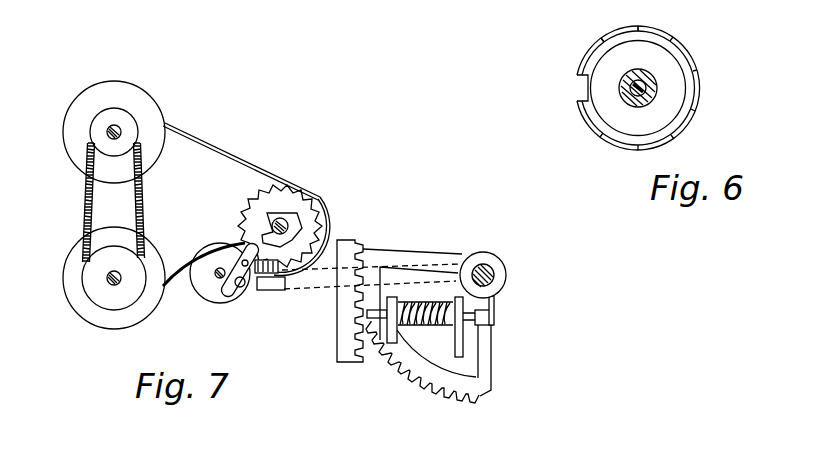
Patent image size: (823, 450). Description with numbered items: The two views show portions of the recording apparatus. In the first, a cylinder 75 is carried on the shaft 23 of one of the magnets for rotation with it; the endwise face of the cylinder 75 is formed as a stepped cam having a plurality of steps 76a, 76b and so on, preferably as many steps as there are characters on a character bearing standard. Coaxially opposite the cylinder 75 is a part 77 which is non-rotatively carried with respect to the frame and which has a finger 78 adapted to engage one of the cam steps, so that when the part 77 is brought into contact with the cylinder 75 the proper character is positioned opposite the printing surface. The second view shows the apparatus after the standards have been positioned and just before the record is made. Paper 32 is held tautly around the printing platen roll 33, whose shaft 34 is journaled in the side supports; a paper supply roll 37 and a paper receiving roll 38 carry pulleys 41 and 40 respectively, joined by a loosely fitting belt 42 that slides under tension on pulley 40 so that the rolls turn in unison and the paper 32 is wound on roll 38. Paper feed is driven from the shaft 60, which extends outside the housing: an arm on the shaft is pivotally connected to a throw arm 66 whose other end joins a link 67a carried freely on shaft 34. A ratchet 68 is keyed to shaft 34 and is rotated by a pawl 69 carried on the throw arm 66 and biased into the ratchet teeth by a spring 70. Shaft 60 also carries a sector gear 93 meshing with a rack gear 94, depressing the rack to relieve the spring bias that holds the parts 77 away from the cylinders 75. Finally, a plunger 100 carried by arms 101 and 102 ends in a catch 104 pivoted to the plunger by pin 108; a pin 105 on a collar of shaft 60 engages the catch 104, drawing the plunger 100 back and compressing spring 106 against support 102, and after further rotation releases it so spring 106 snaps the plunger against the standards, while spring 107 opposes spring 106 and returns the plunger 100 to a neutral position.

In FIG. 7, the paper supply roll 37 is at (100, 318).
In FIG. 7, the paper receiving roll 38 is at (145, 111).
In FIG. 7, the pulley 40 is at (108, 130).
In FIG. 7, the pulley 41 is at (95, 288).
In FIG. 7, the belt 42 is at (88, 196).
In FIG. 7, the paper 32 is at (230, 157).
In FIG. 7, the printing platen roll 33 is at (272, 182).
In FIG. 7, the shaft 34 is at (290, 226).
In FIG. 7, the link 67a is at (266, 220).
In FIG. 7, the ratchet 68 is at (297, 210).
In FIG. 7, the pawl 69 is at (218, 243).
In FIG. 7, the spring 70 is at (258, 285).
In FIG. 7, the throw arm 66 is at (275, 287).
In FIG. 7, the rack gear 94 is at (338, 346).
In FIG. 7, the sector gear 93 is at (428, 388).
In FIG. 7, the plunger 100 is at (497, 326).
In FIG. 7, the arm 101 is at (387, 360).
In FIG. 7, the arm 102 is at (465, 343).
In FIG. 7, the spring 106 is at (442, 298).
In FIG. 7, the spring 107 is at (405, 328).
In FIG. 7, the pin 108 is at (494, 318).
In FIG. 7, the catch portion 104 is at (496, 302).
In FIG. 7, the pin 105 is at (499, 291).
In FIG. 7, the shaft 60 is at (492, 272).
In FIG. 6, the cylinder 75 is at (621, 146).
In FIG. 6, the step 76a is at (590, 58).
In FIG. 6, the step 76b is at (630, 28).
In FIG. 6, the part 77 is at (674, 110).
In FIG. 6, the finger 78 is at (576, 90).
In FIG. 6, the shaft 23 is at (660, 89).